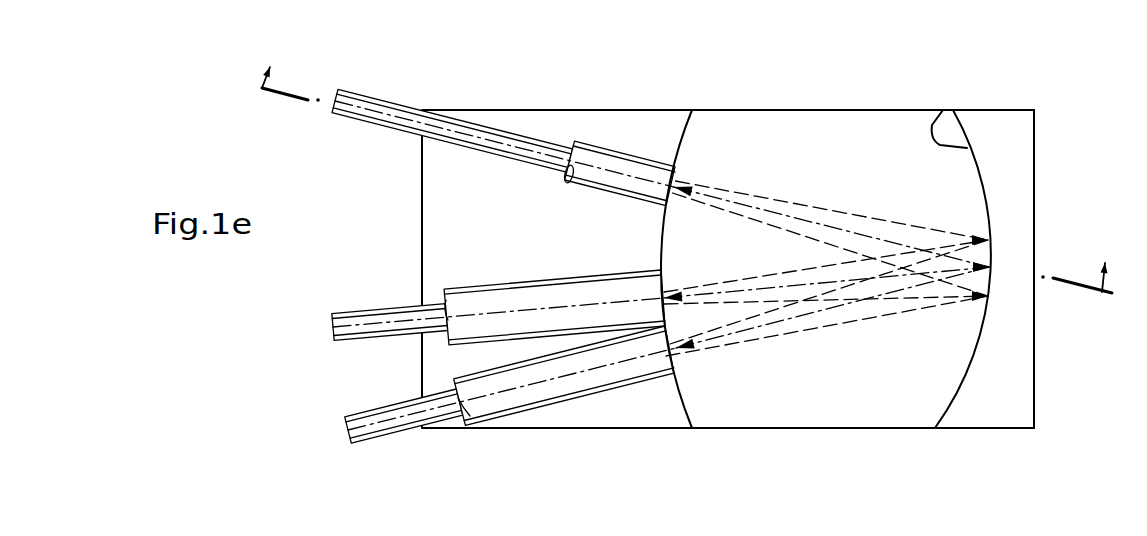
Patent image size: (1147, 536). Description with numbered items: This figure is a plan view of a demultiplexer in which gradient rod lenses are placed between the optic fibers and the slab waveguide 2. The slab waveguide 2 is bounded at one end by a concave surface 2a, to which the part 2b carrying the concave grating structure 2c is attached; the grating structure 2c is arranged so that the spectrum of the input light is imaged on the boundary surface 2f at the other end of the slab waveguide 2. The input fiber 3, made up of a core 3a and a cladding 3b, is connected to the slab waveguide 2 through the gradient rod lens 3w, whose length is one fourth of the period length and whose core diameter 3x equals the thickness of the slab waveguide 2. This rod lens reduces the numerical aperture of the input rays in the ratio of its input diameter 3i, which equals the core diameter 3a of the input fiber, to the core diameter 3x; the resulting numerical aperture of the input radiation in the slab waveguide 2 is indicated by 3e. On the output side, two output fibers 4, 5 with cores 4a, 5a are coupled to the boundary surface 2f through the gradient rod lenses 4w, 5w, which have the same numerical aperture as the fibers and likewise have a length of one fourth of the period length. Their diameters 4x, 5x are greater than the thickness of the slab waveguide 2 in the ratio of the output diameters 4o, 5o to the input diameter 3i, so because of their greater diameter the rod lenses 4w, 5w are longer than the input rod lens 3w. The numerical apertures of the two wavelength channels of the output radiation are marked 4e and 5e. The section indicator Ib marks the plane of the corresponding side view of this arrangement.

The slab waveguide 2 is at (889, 122).
The concave surface 2a is at (934, 110).
The part with grating structure 2b is at (1018, 199).
The grating structure 2c is at (988, 250).
The boundary surface 2f is at (688, 432).
The input fiber 3 is at (380, 92).
The core of input fiber 3a is at (355, 112).
The cladding of input fiber 3b is at (402, 123).
The gradient rod lens 3w is at (612, 153).
The core diameter of gradient rod lens 3x is at (645, 175).
The input diameter 3i is at (566, 182).
The numerical aperture of input radiation 3e is at (786, 215).
The output fiber 4 is at (391, 304).
The core of output fiber 4a is at (381, 352).
The output diameter 4o is at (450, 320).
The gradient rod lens 4w is at (565, 280).
The diameter of gradient rod lens 4x is at (632, 292).
The numerical aperture of output radiation 4e is at (661, 283).
The output fiber 5 is at (384, 449).
The core of output fiber 5a is at (390, 438).
The output diameter 5o is at (472, 400).
The gradient rod lens 5w is at (583, 398).
The diameter of gradient rod lens 5x is at (648, 363).
The numerical aperture of output radiation 5e is at (766, 327).
The section line Ib is at (693, 162).